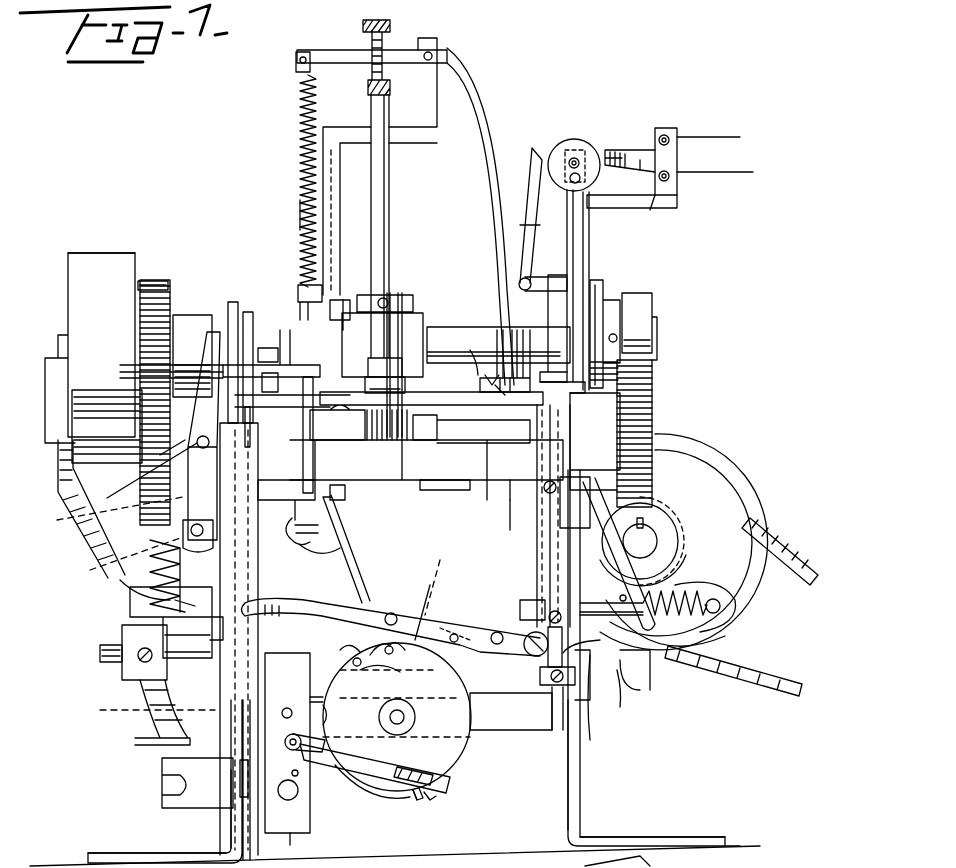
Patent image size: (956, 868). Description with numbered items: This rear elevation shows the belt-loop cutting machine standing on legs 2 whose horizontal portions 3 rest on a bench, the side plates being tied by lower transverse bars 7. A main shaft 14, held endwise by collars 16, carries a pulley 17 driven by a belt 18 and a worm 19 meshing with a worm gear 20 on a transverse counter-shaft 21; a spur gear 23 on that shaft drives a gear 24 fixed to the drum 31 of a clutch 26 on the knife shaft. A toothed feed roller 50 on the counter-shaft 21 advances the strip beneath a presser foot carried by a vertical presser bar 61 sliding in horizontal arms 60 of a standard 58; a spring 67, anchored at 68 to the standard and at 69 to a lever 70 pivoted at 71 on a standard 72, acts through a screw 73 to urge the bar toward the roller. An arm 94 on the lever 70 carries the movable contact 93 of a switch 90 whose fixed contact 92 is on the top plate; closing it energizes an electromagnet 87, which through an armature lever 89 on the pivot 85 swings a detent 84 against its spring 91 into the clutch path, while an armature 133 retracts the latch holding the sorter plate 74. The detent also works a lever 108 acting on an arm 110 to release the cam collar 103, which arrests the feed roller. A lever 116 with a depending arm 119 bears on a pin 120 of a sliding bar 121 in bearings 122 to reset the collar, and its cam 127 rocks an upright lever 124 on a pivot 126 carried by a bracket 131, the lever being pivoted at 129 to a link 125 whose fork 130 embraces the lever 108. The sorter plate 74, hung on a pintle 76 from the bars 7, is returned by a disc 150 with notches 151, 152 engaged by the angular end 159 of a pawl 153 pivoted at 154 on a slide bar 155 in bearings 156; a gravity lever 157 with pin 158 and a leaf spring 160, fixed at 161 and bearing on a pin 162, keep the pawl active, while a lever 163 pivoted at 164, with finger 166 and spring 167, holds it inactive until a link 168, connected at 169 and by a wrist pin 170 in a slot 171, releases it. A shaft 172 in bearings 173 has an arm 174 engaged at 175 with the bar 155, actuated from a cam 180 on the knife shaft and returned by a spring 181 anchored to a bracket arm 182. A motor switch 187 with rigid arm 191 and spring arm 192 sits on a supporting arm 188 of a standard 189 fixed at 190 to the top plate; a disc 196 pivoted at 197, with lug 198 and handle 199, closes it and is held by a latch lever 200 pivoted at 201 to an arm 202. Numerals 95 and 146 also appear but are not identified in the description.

The legs 2 is at (572, 800).
The horizontal portions 3 is at (665, 835).
The lower transverse bars 7 is at (534, 732).
The main shaft 14 is at (648, 540).
The collars 16 is at (394, 467).
The pulley 17 is at (705, 455).
The belt 18 is at (790, 690).
The worm 19 is at (660, 515).
The worm gear 20 is at (655, 400).
The counter-shaft 21 is at (478, 445).
The spur gear 23 is at (140, 375).
The gear 24 is at (168, 287).
The clutch 26 is at (107, 244).
The drum 31 is at (135, 262).
The feed roller 50 is at (376, 511).
The standard 58 is at (300, 172).
The horizontal arms 60 is at (360, 300).
The presser bar 61 is at (386, 215).
The spring 67 is at (300, 215).
The securing point of spring lower end 68 is at (300, 290).
The securing point of spring upper end 69 is at (300, 57).
The lever 70 is at (318, 52).
The pivot 71 is at (432, 56).
The standard 72 is at (437, 45).
The screw 73 is at (392, 26).
The sorter plate 74 is at (366, 590).
The pintle 76 is at (404, 717).
The detent 84 is at (100, 545).
The pivot 85 is at (100, 655).
The electromagnet 87 is at (120, 630).
The armature lever 89 is at (145, 725).
The switch 90 is at (487, 350).
The spring 91 is at (178, 604).
The fixed contact 92 is at (478, 350).
The movable contact 93 is at (476, 385).
The arm 94 is at (492, 185).
The bracket 95 is at (200, 800).
The cam collar 103 is at (322, 420).
The lever 108 is at (325, 532).
The arm 110 is at (322, 503).
The lever 116 is at (282, 360).
The arm 119 is at (316, 455).
The pin 120 is at (316, 470).
The bar 121 is at (512, 472).
The bearings 122 is at (178, 482).
The lever 124 is at (140, 400).
The link 125 is at (261, 639).
The pivot 126 is at (100, 500).
The cam 127 is at (245, 345).
The pivot 129 is at (140, 560).
The fork 130 is at (345, 548).
The bracket 131 is at (180, 462).
The armature 133 is at (125, 590).
The bracket 146 is at (605, 290).
The disc 150 is at (462, 755).
The peripheral notch 151 is at (385, 665).
The peripheral notch 152 is at (400, 653).
The pawl 153 is at (510, 690).
The pivot 154 is at (600, 672).
The slide bar 155 is at (630, 660).
The bearings 156 is at (652, 715).
The gravity actuated lever 157 is at (514, 613).
The pin 158 is at (499, 632).
The angular end 159 is at (432, 618).
The leaf spring 160 is at (444, 570).
The securing point of leaf spring 161 is at (328, 612).
The pin 162 is at (452, 645).
The lever 163 is at (322, 790).
The pivot 164 is at (325, 838).
The finger 166 is at (353, 660).
The spring 167 is at (326, 715).
The link 168 is at (395, 795).
The pivotal connection 169 is at (285, 743).
The wrist pin 170 is at (430, 805).
The slot 171 is at (465, 787).
The shaft 172 is at (590, 450).
The bearings 173 is at (655, 482).
The arm 174 is at (620, 567).
The engagement 175 is at (733, 671).
The cam 180 is at (650, 296).
The spring 181 is at (738, 602).
The bracket arm 182 is at (700, 640).
The switch 187 is at (633, 138).
The supporting arm 188 is at (635, 205).
The standard 189 is at (590, 262).
The securing point of standard 190 is at (512, 385).
The rigid arm 191 is at (652, 140).
The spring arm 192 is at (660, 205).
The disc 196 is at (562, 138).
The pivot 197 is at (580, 160).
The lug 198 is at (606, 170).
The operating handle 199 is at (546, 215).
The latch lever 200 is at (528, 228).
The pivot 201 is at (518, 287).
The arm 202 is at (547, 283).